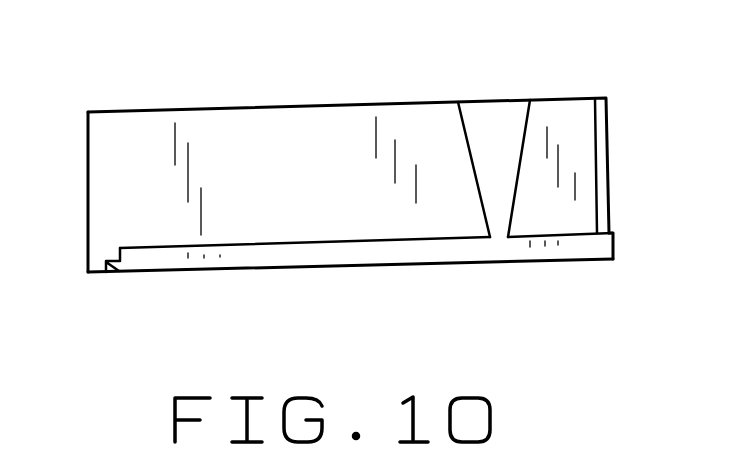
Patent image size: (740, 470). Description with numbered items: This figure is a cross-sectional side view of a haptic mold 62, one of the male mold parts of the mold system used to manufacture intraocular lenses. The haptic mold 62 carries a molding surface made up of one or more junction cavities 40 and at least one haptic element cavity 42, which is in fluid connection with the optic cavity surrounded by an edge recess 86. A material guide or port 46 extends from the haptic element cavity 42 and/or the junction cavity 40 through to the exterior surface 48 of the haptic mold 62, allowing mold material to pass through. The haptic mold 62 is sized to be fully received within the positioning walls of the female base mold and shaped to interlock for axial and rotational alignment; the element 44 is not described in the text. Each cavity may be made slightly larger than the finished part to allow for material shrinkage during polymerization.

The junction cavity 40 is at (595, 250).
The haptic element cavity 42 is at (350, 250).
The end wall 44 is at (609, 183).
The material guide or port 46 is at (502, 132).
The exterior surface 48 is at (88, 206).
The haptic mold 62 is at (128, 142).
The edge recess 86 is at (117, 273).